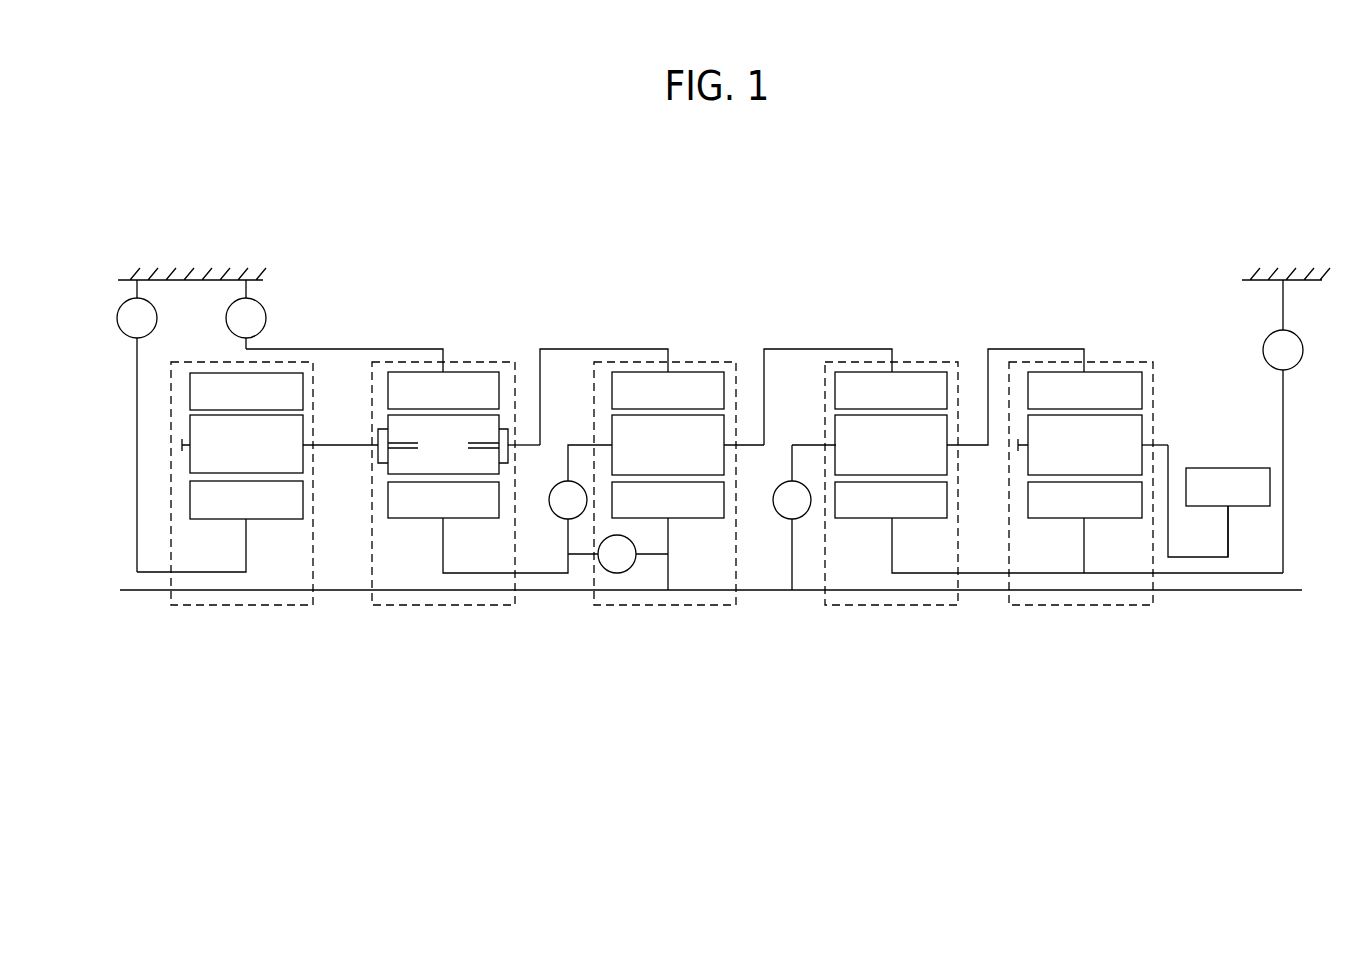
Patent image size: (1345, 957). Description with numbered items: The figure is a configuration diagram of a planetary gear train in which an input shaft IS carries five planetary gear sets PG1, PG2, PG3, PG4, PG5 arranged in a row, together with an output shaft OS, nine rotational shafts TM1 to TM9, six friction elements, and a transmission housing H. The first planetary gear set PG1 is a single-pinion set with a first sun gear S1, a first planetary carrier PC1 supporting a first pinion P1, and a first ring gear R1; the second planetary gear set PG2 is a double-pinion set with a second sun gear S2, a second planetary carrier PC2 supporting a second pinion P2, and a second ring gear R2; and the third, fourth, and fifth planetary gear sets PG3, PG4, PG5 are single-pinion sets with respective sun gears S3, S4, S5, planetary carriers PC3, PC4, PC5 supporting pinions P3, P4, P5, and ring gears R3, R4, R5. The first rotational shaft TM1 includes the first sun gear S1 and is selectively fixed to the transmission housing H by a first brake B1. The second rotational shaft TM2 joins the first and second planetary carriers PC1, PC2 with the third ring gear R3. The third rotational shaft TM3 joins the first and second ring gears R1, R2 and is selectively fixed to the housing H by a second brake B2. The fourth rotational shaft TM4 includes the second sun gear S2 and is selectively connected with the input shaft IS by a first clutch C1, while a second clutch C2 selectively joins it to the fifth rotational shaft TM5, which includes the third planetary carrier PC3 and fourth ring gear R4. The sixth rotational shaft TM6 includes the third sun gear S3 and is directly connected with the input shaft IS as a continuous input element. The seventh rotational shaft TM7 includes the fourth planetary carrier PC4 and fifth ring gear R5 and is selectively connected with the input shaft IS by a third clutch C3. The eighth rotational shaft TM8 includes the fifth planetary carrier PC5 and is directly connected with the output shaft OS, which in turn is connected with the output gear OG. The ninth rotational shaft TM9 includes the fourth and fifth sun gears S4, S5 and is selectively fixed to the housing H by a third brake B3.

The transmission housing H is at (205, 268).
The first brake B1 is at (137, 426).
The second brake B2 is at (246, 314).
The third brake B3 is at (1283, 426).
The first clutch C1 is at (618, 554).
The second clutch C2 is at (568, 500).
The third clutch C3 is at (792, 500).
The first planetary gear set PG1 is at (213, 606).
The second planetary gear set PG2 is at (457, 606).
The third planetary gear set PG3 is at (660, 606).
The fourth planetary gear set PG4 is at (886, 606).
The fifth planetary gear set PG5 is at (1070, 606).
The first ring gear R1 is at (246, 391).
The second ring gear R2 is at (443, 390).
The third ring gear R3 is at (668, 390).
The fourth ring gear R4 is at (891, 390).
The fifth ring gear R5 is at (1085, 390).
The first pinion P1 is at (242, 444).
The second pinion P2 is at (443, 444).
The third pinion P3 is at (668, 445).
The fourth pinion P4 is at (891, 445).
The fifth pinion P5 is at (1080, 445).
The first sun gear S1 is at (246, 500).
The second sun gear S2 is at (443, 500).
The third sun gear S3 is at (668, 500).
The fourth sun gear S4 is at (891, 500).
The fifth sun gear S5 is at (1085, 527).
The first planetary carrier PC1 is at (312, 446).
The second planetary carrier PC2 is at (524, 446).
The third planetary carrier PC3 is at (752, 446).
The fourth planetary carrier PC4 is at (810, 444).
The fifth planetary carrier PC5 is at (1162, 444).
The first rotational shaft TM1 is at (252, 527).
The second rotational shaft TM2 is at (542, 384).
The third rotational shaft TM3 is at (345, 348).
The fourth rotational shaft TM4 is at (441, 540).
The fifth rotational shaft TM5 is at (795, 348).
The sixth rotational shaft TM6 is at (676, 540).
The seventh rotational shaft TM7 is at (1038, 348).
The eighth rotational shaft TM8 is at (1170, 462).
The ninth rotational shaft TM9 is at (984, 577).
The input shaft IS is at (340, 592).
The output shaft OS is at (1198, 558).
The output gear OG is at (1228, 487).